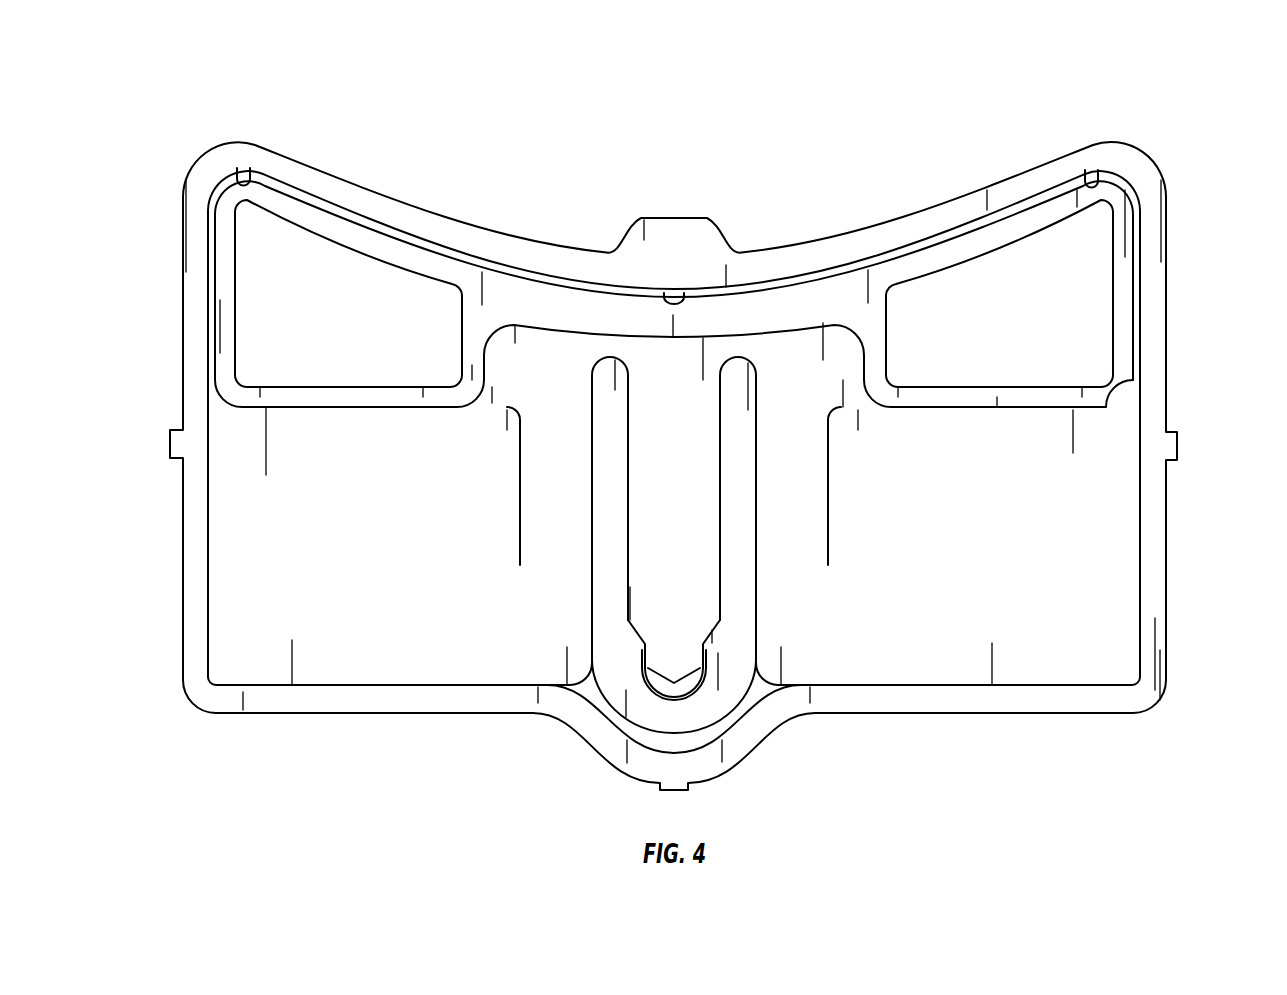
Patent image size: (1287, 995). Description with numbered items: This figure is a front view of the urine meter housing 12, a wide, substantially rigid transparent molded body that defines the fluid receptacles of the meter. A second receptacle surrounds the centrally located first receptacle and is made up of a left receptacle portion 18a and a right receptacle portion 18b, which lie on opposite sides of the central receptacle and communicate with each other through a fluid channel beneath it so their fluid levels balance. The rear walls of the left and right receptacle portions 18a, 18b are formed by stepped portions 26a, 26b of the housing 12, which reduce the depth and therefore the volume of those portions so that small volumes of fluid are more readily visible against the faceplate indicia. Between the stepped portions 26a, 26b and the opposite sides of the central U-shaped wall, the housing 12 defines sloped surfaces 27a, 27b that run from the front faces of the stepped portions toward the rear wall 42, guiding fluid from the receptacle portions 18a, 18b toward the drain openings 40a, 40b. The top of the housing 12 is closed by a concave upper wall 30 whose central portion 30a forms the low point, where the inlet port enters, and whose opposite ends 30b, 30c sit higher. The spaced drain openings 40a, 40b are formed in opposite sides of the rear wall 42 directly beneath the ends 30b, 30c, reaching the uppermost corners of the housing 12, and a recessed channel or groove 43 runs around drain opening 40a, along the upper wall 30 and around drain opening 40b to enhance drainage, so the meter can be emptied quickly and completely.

The housing 12 is at (1148, 163).
The left receptacle portion 18a is at (375, 628).
The right receptacle portion 18b is at (950, 633).
The stepped portion 26a is at (335, 432).
The stepped portion 26b is at (955, 423).
The sloped surface 27a is at (553, 460).
The sloped surface 27b is at (783, 443).
The upper wall 30 is at (445, 253).
The central portion 30a is at (683, 290).
The end 30b is at (253, 165).
The end 30c is at (1093, 175).
The drain opening 40a is at (264, 242).
The drain opening 40b is at (1058, 263).
The rear wall 42 is at (810, 349).
The recessed channel or groove 43 is at (507, 293).